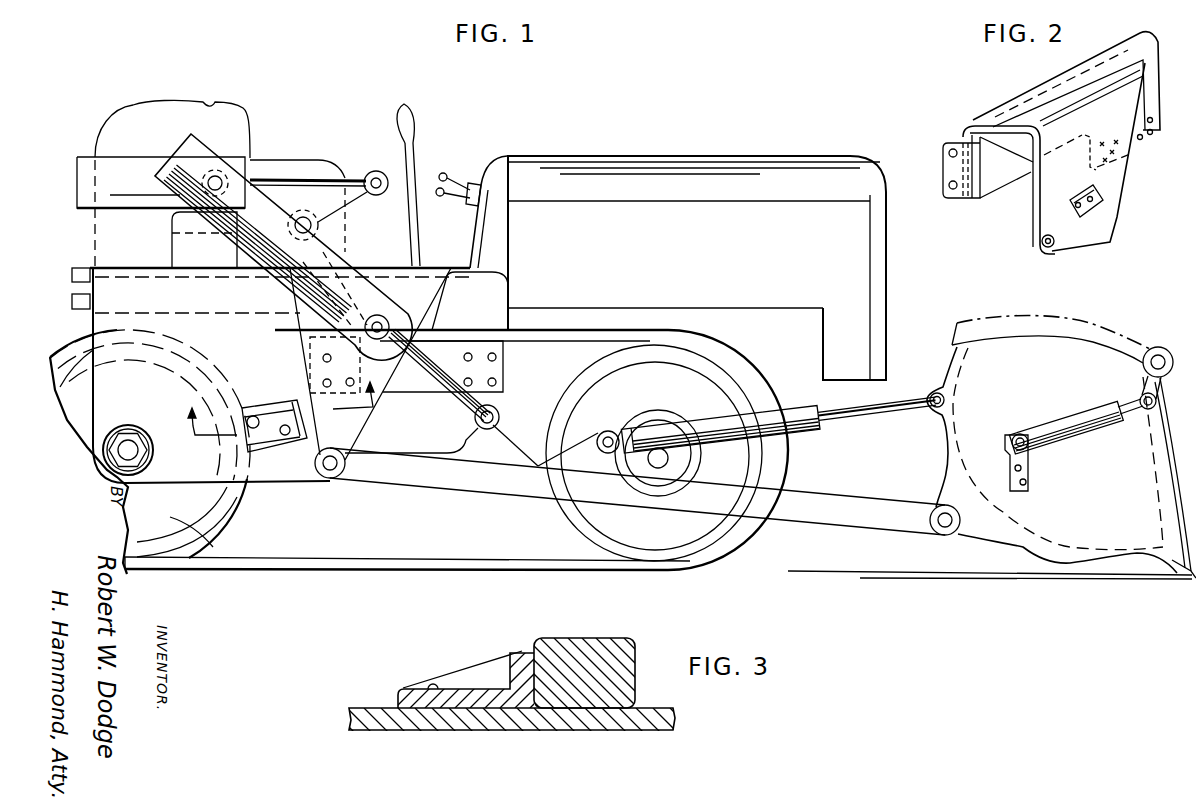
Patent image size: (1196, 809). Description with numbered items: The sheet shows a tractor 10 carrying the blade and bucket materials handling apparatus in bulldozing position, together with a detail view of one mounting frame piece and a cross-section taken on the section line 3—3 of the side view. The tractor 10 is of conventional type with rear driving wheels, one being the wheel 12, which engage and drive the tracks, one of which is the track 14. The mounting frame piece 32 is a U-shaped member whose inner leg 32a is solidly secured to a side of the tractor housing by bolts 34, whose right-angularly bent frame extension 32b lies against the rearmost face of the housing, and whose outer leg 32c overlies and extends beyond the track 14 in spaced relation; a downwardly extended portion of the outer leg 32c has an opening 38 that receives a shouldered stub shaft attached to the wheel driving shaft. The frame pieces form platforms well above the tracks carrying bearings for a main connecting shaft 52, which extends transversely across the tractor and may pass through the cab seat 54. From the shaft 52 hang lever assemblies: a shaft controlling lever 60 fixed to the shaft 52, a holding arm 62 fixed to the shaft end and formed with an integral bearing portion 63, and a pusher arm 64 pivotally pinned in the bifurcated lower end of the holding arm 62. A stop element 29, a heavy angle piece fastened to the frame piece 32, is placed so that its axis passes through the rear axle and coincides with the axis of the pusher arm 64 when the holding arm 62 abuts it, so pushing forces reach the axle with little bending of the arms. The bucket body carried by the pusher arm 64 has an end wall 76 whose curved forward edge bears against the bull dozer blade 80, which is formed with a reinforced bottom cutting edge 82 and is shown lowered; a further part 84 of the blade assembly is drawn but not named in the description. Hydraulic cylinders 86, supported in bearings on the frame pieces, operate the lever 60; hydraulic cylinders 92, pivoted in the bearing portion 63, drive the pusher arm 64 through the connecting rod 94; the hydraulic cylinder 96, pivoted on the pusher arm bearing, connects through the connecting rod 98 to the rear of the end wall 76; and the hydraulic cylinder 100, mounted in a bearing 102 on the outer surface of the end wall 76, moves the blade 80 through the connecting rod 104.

In FIG. 1, the tractor 10 is at (660, 168).
In FIG. 1, the rear driving wheel 12 is at (212, 544).
In FIG. 1, the track 14 is at (321, 564).
In FIG. 1, the stop element 29 is at (258, 404).
In FIG. 3, the stop element 29 is at (517, 652).
In FIG. 1, the section line 3— 3 is at (278, 398).
In FIG. 1, the mounting frame piece 32 is at (100, 262).
In FIG. 2, the mounting frame piece 32 is at (978, 176).
In FIG. 2, the inner leg 32a is at (968, 132).
In FIG. 2, the right-angularly bent frame extension 32b is at (953, 199).
In FIG. 2, the outer leg 32c is at (1040, 223).
In FIG. 3, the outer leg 32c is at (660, 710).
In FIG. 1, the bolts 34 is at (498, 357).
In FIG. 2, the opening 38 is at (1053, 245).
In FIG. 1, the main connecting shaft 52 is at (303, 222).
In FIG. 1, the cab seat 54 is at (236, 131).
In FIG. 1, the shaft controlling lever 60 is at (360, 204).
In FIG. 1, the holding arm 62 is at (362, 240).
In FIG. 3, the holding arm 62 is at (603, 645).
In FIG. 1, the bearing portion 63 is at (381, 302).
In FIG. 1, the pusher arm 64 is at (530, 480).
In FIG. 1, the end wall 76 is at (1072, 560).
In FIG. 1, the bull dozer blade 80 is at (1093, 323).
In FIG. 1, the bottom cutting edge 82 is at (1186, 570).
In FIG. 1, the blade end plate 84 is at (1160, 455).
In FIG. 1, the hydraulic cylinder 86 is at (133, 194).
In FIG. 1, the hydraulic cylinder 92 is at (190, 146).
In FIG. 1, the connecting rod 94 is at (464, 409).
In FIG. 1, the hydraulic cylinder 96 is at (733, 442).
In FIG. 1, the connecting rod 98 is at (860, 417).
In FIG. 1, the hydraulic cylinder 100 is at (1064, 440).
In FIG. 1, the bearing 102 is at (1012, 455).
In FIG. 1, the connecting rod 104 is at (1136, 410).